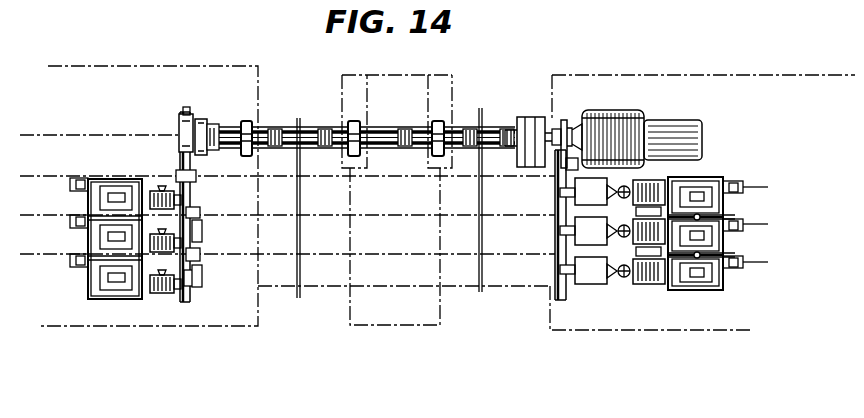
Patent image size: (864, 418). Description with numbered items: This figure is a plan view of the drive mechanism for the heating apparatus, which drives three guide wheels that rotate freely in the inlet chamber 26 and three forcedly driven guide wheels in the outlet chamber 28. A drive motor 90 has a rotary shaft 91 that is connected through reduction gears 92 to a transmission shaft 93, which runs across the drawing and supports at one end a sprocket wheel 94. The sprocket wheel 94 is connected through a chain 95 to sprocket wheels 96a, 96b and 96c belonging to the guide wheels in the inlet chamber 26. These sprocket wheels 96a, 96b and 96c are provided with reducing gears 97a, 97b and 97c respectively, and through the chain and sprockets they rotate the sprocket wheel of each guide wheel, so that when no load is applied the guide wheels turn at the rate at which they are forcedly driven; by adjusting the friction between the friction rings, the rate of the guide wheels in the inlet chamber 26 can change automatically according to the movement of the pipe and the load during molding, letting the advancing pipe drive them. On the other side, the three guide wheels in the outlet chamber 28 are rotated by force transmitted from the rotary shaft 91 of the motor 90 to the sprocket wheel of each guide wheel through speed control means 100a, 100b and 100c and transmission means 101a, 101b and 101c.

The inlet chamber 26 is at (247, 315).
The outlet chamber 28 is at (632, 330).
The drive motor 90 is at (617, 112).
The rotary shaft 91 is at (566, 120).
The reduction gears 92 is at (530, 117).
The transmission shaft 93 is at (383, 137).
The sprocket wheel 94 is at (178, 122).
The chain 95 is at (212, 133).
The sprocket wheel 96a is at (230, 127).
The sprocket wheel 96b is at (207, 227).
The sprocket wheel 96c is at (203, 277).
The reducing gear 97a is at (152, 188).
The reducing gear 97b is at (127, 293).
The reducing gear 97c is at (157, 293).
The speed control means 100a is at (580, 193).
The speed control means 100b is at (582, 236).
The speed control means 100c is at (587, 284).
The transmission means 101a is at (693, 177).
The transmission means 101b is at (693, 212).
The transmission means 101c is at (667, 290).